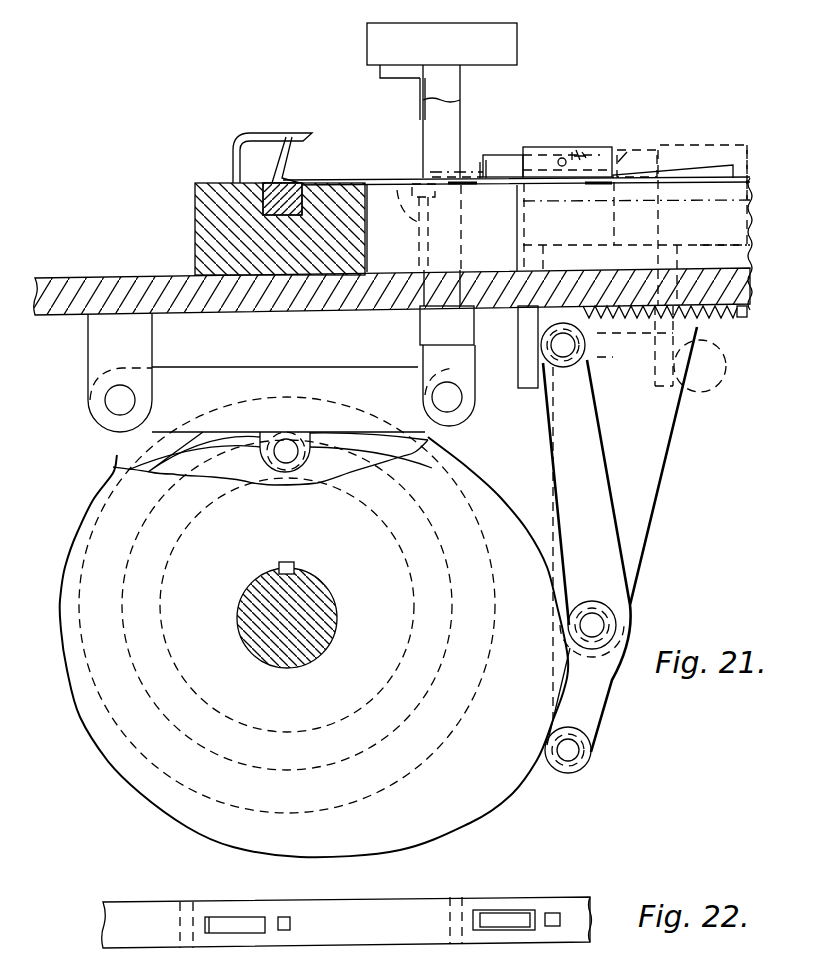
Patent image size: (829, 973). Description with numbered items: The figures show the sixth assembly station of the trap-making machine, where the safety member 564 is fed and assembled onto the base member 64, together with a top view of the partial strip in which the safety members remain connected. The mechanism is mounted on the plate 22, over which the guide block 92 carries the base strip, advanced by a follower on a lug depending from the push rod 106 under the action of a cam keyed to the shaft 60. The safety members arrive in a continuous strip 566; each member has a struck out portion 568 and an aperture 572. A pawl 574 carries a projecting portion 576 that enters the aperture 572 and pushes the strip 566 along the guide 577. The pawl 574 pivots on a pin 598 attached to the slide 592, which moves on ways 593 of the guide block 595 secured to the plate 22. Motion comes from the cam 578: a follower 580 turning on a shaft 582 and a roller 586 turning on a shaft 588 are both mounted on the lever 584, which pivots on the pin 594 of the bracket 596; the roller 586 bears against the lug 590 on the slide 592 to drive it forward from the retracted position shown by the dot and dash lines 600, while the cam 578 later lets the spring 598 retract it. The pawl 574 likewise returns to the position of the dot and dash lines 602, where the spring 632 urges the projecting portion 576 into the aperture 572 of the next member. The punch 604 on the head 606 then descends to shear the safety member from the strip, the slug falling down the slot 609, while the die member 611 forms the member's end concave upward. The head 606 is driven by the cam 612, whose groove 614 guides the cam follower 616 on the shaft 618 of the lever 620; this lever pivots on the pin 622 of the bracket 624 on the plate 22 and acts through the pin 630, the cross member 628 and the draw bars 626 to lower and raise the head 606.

In FIG. 21, the plate 22 is at (92, 277).
In FIG. 21, the shaft 60 is at (238, 618).
In FIG. 21, the base member 64 is at (235, 178).
In FIG. 21, the guide block 92 is at (195, 226).
In FIG. 21, the push rod 106 is at (263, 200).
In FIG. 22, the safety member 564 is at (380, 945).
In FIG. 21, the continuous strip 566 is at (700, 168).
In FIG. 22, the continuous strip 566 is at (590, 905).
In FIG. 22, the struck out portion 568 is at (237, 930).
In FIG. 22, the aperture 572 is at (285, 932).
In FIG. 21, the pawl 574 is at (493, 153).
In FIG. 21, the projecting portion 576 is at (484, 175).
In FIG. 21, the guide 577 is at (704, 165).
In FIG. 21, the cam 578 is at (512, 795).
In FIG. 21, the follower 580 is at (590, 762).
In FIG. 21, the shaft 582 is at (585, 748).
In FIG. 21, the lever 584 is at (602, 702).
In FIG. 21, the roller 586 is at (573, 368).
In FIG. 21, the shaft 588 is at (588, 355).
In FIG. 21, the lug 590 is at (518, 360).
In FIG. 21, the slide 592 is at (625, 150).
In FIG. 21, the ways 593 is at (735, 240).
In FIG. 21, the pin 594 is at (608, 625).
In FIG. 21, the guide block 595 is at (748, 200).
In FIG. 21, the bracket 596 is at (657, 547).
In FIG. 21, the pin 598 is at (565, 158).
In FIG. 21, the dot and dash lines 600 is at (683, 146).
In FIG. 21, the dot and dash lines 602 is at (636, 150).
In FIG. 21, the punch 604 is at (378, 72).
In FIG. 21, the head 606 is at (518, 46).
In FIG. 22, the head 606 is at (468, 903).
In FIG. 21, the slot 609 is at (410, 170).
In FIG. 21, the die member 611 is at (418, 177).
In FIG. 21, the cam 612 is at (183, 442).
In FIG. 21, the groove 614 is at (160, 458).
In FIG. 21, the cam follower 616 is at (267, 447).
In FIG. 21, the shaft 618 is at (283, 445).
In FIG. 21, the lever 620 is at (347, 350).
In FIG. 21, the pin 622 is at (105, 400).
In FIG. 21, the bracket 624 is at (88, 350).
In FIG. 21, the draw bars 626 is at (462, 92).
In FIG. 21, the cross member 628 is at (418, 330).
In FIG. 21, the pin 630 is at (432, 397).
In FIG. 21, the spring 632 is at (605, 148).